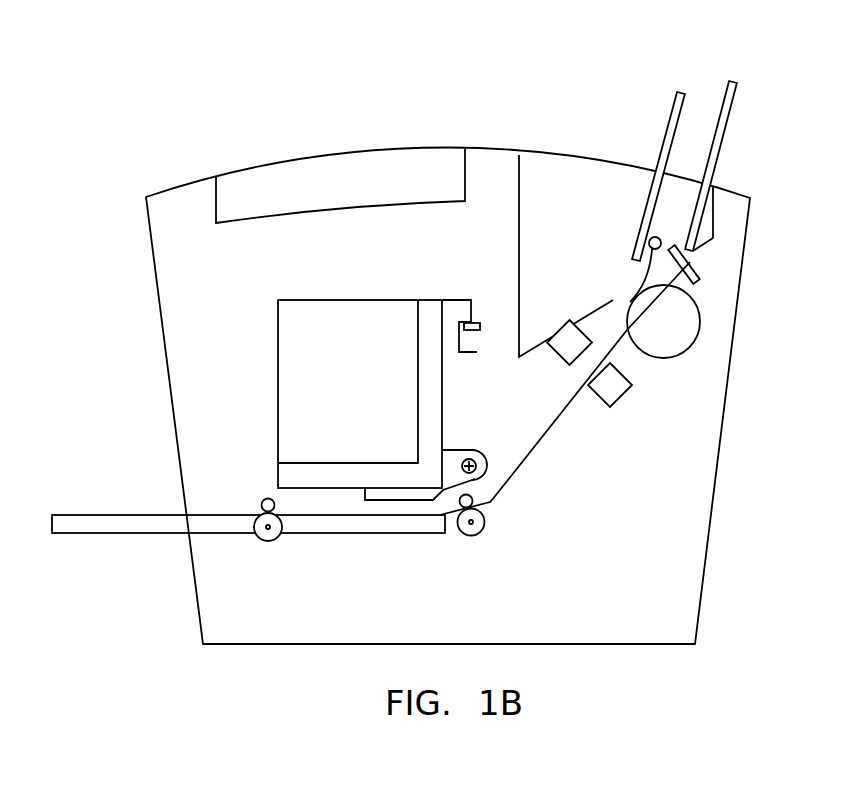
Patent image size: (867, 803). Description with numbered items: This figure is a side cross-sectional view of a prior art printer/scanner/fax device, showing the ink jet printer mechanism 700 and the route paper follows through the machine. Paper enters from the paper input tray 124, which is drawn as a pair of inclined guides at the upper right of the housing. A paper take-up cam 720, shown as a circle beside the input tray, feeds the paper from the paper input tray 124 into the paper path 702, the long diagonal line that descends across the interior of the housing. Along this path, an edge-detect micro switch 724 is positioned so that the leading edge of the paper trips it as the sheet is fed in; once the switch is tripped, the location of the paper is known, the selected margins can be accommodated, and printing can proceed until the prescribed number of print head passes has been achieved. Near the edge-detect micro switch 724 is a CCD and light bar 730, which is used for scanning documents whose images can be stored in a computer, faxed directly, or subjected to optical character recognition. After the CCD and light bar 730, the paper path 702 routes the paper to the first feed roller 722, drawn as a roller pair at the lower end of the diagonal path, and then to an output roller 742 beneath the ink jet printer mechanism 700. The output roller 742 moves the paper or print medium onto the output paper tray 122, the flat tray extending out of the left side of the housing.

The output paper tray 122 is at (117, 513).
The paper input tray 124 is at (728, 83).
The ink jet printer mechanism 700 is at (282, 477).
The paper path 702 is at (518, 472).
The paper take-up cam 720 is at (661, 358).
The first feed roller 722 is at (472, 536).
The edge-detect micro switch 724 is at (613, 404).
The CCD and light bar 730 is at (567, 320).
The output roller 742 is at (268, 541).